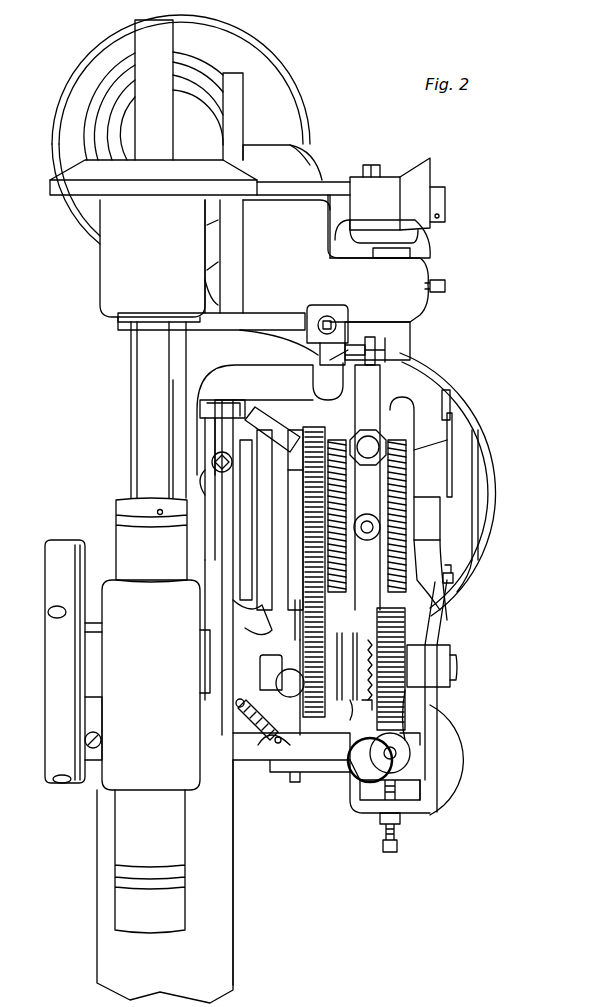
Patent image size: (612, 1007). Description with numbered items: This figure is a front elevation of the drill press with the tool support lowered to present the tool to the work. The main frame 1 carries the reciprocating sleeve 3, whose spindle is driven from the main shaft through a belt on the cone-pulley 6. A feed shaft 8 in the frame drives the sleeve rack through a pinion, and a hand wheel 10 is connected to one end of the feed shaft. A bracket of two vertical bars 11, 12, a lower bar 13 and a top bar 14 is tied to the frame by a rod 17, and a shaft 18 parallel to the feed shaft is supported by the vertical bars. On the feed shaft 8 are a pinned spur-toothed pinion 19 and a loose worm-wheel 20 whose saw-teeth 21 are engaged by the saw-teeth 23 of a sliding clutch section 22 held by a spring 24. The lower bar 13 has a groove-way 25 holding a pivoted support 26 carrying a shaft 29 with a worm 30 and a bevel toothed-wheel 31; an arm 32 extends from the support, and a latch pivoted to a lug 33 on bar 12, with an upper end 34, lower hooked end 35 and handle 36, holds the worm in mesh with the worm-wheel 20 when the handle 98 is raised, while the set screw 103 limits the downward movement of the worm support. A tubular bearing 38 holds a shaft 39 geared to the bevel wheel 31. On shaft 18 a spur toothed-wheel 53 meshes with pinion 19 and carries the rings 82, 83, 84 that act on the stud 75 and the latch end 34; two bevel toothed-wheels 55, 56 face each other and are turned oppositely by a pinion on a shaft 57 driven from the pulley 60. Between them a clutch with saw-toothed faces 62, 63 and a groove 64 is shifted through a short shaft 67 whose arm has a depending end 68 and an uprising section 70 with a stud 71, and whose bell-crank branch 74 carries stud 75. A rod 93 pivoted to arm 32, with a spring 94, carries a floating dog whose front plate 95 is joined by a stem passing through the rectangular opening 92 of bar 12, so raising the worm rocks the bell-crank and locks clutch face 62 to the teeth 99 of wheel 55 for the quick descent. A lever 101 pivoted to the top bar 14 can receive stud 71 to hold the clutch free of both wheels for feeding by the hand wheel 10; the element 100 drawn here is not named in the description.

The main frame 1 is at (152, 261).
The reciprocating sleeve 3 is at (113, 500).
The cone-pulley 6 is at (181, 129).
The feed shaft 8 is at (458, 667).
The hand wheel 10 is at (73, 652).
The vertical bar 11 is at (444, 603).
The vertical bar 12 is at (252, 625).
The lower bar 13 is at (320, 772).
The top bar 14 is at (270, 419).
The rod 17 is at (211, 312).
The shaft 18 is at (478, 535).
The spur-toothed pinion 19 is at (284, 765).
The worm-wheel 20 is at (400, 707).
The saw-teeth 21 is at (372, 650).
The sliding clutch section 22 is at (362, 637).
The saw-teeth 23 is at (372, 710).
The spring 24 is at (340, 710).
The groove-way 25 is at (410, 797).
The support 26 is at (415, 776).
The shaft 29 is at (397, 753).
The worm 30 is at (410, 736).
The beveled toothed-wheel 31 is at (433, 752).
The arm 32 is at (291, 757).
The lug 33 is at (271, 672).
The upper end 34 is at (300, 642).
The lower hooked end 35 is at (300, 712).
The handle 36 is at (290, 683).
The tubular bearing 38 is at (412, 342).
The shaft 39 is at (412, 255).
The spur toothed-wheel 53 is at (316, 561).
The beveled toothed-wheel 55 is at (300, 555).
The beveled toothed-wheel 56 is at (408, 467).
The shaft 57 is at (135, 910).
The pulley 60 is at (478, 427).
The saw-toothed face 62 is at (362, 488).
The saw-toothed face 63 is at (380, 505).
The circumferential groove 64 is at (380, 567).
The short shaft 67 is at (368, 447).
The depending end 68 is at (367, 510).
The uprising section 70 is at (367, 487).
The stud 71 is at (388, 358).
The branch 74 is at (294, 346).
The stud 75 is at (256, 503).
The ring 82 is at (263, 520).
The ring 83 is at (287, 453).
The ring 84 is at (297, 540).
The rectangular opening 92 is at (203, 411).
The rod 93 is at (218, 618).
The spring 94 is at (260, 740).
The front plate 95 is at (198, 437).
The handle 98 is at (370, 760).
The teeth 99 is at (343, 516).
The slot 100 is at (393, 533).
The lever 101 is at (352, 335).
The set screw 103 is at (406, 834).